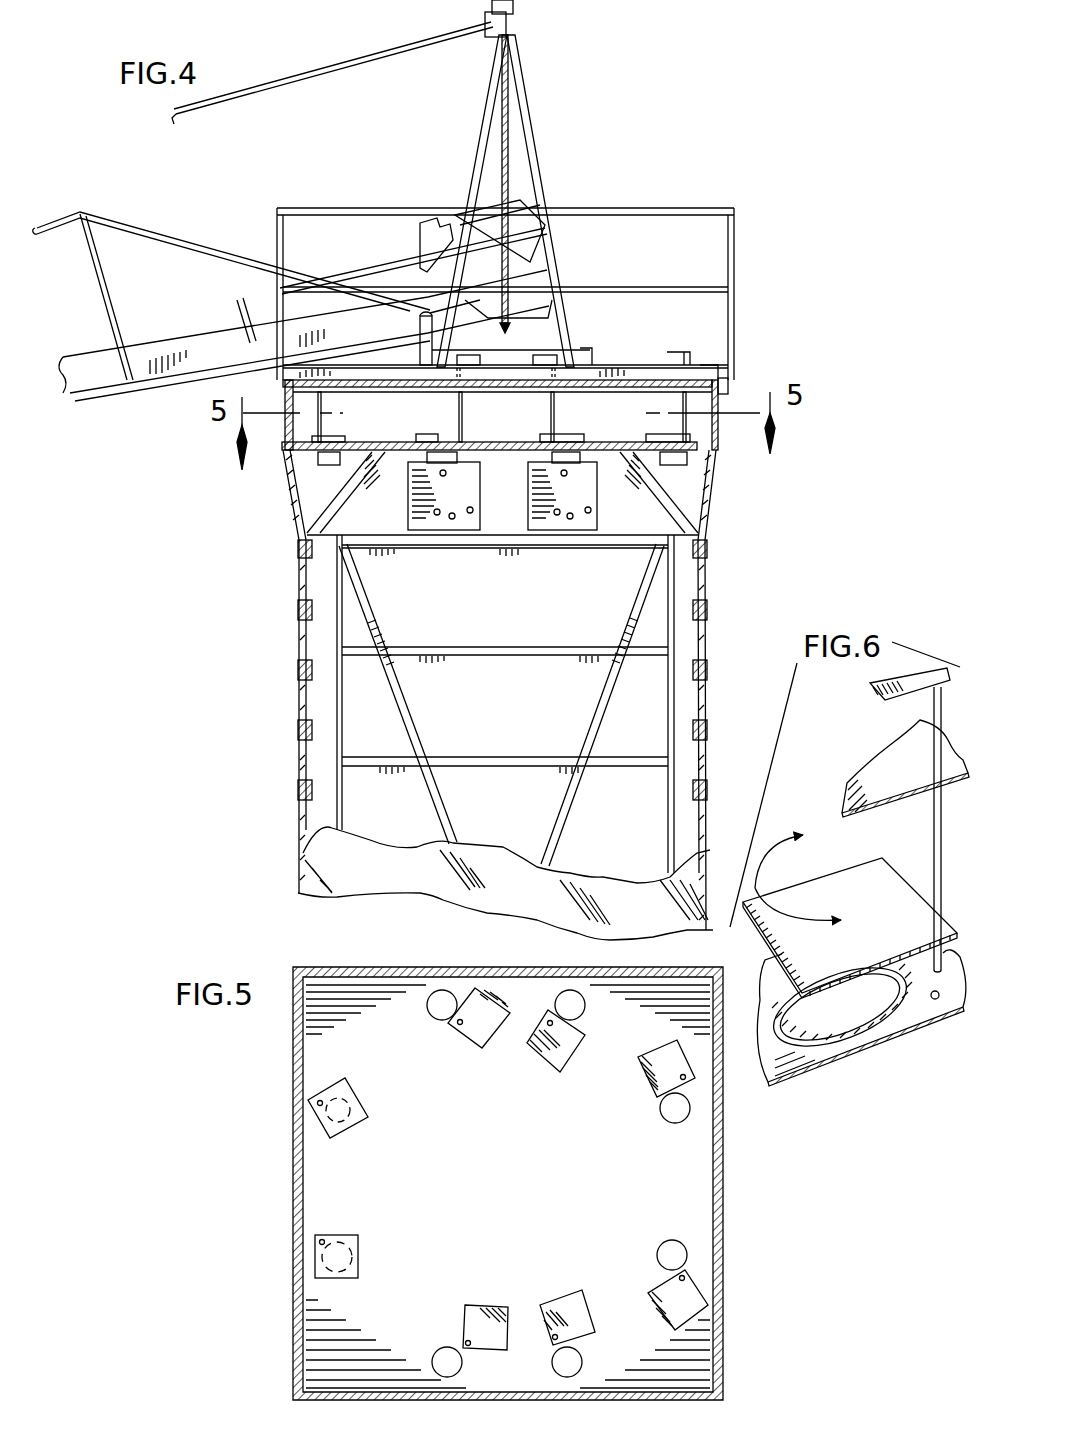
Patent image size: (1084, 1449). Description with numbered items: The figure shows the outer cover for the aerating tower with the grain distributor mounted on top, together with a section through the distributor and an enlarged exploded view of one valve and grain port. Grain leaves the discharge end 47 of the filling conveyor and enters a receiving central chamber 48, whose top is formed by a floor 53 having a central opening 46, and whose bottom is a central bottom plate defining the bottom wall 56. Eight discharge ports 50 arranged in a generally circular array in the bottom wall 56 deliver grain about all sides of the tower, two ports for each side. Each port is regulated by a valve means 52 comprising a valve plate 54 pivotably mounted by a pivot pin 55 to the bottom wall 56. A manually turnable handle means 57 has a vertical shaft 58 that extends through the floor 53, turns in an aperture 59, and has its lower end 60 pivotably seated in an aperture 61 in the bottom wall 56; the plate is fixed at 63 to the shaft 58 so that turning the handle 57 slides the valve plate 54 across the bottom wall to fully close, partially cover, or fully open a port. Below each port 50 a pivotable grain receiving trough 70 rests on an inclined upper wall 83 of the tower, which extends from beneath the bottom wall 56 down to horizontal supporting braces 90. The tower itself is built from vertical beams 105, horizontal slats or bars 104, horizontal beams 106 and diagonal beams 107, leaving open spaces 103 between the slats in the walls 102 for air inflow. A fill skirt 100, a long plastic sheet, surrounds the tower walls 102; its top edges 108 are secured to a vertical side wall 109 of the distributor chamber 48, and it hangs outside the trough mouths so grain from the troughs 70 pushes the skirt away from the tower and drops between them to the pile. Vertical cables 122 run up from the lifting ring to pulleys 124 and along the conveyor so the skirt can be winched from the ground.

In FIG. 4, the opening 46 is at (493, 348).
In FIG. 4, the discharge end 47 is at (537, 322).
In FIG. 4, the central chamber 48 is at (511, 429).
In FIG. 4, the discharge ports 50 is at (343, 440).
In FIG. 5, the discharge ports 50 is at (442, 990).
In FIG. 5, the valve means 52 is at (478, 1048).
In FIG. 6, the valve means 52 is at (817, 718).
In FIG. 4, the floor 53 is at (707, 377).
In FIG. 6, the floor 53 is at (847, 761).
In FIG. 5, the valve plate 54 is at (570, 1071).
In FIG. 5, the pivot pin 55 is at (547, 1012).
In FIG. 4, the bottom wall 56 is at (397, 440).
In FIG. 5, the bottom wall 56 is at (536, 1217).
In FIG. 6, the bottom wall 56 is at (818, 1067).
In FIG. 4, the handle means 57 is at (684, 350).
In FIG. 6, the handle means 57 is at (878, 702).
In FIG. 6, the vertical shaft 58 is at (933, 832).
In FIG. 6, the aperture 59 is at (927, 773).
In FIG. 6, the lower end 60 is at (901, 953).
In FIG. 6, the aperture 61 is at (935, 1000).
In FIG. 6, the fixing point 63 is at (917, 933).
In FIG. 4, the grain receiving troughs 70 is at (316, 490).
In FIG. 4, the inclined upper wall 83 is at (382, 520).
In FIG. 4, the horizontal supporting braces 90 is at (598, 540).
In FIG. 4, the fill skirt 100 is at (712, 625).
In FIG. 4, the walls 102 is at (298, 613).
In FIG. 4, the open spaces 103 is at (712, 647).
In FIG. 4, the horizontal slats or bars 104 is at (712, 675).
In FIG. 4, the vertical beams 105 is at (328, 727).
In FIG. 4, the horizontal beams 106 is at (490, 647).
In FIG. 4, the diagonal beams 107 is at (628, 613).
In FIG. 4, the top edges 108 is at (722, 392).
In FIG. 4, the vertical side wall 109 is at (286, 383).
In FIG. 4, the vertical cables 122 is at (509, 128).
In FIG. 4, the pulleys 124 is at (513, 21).